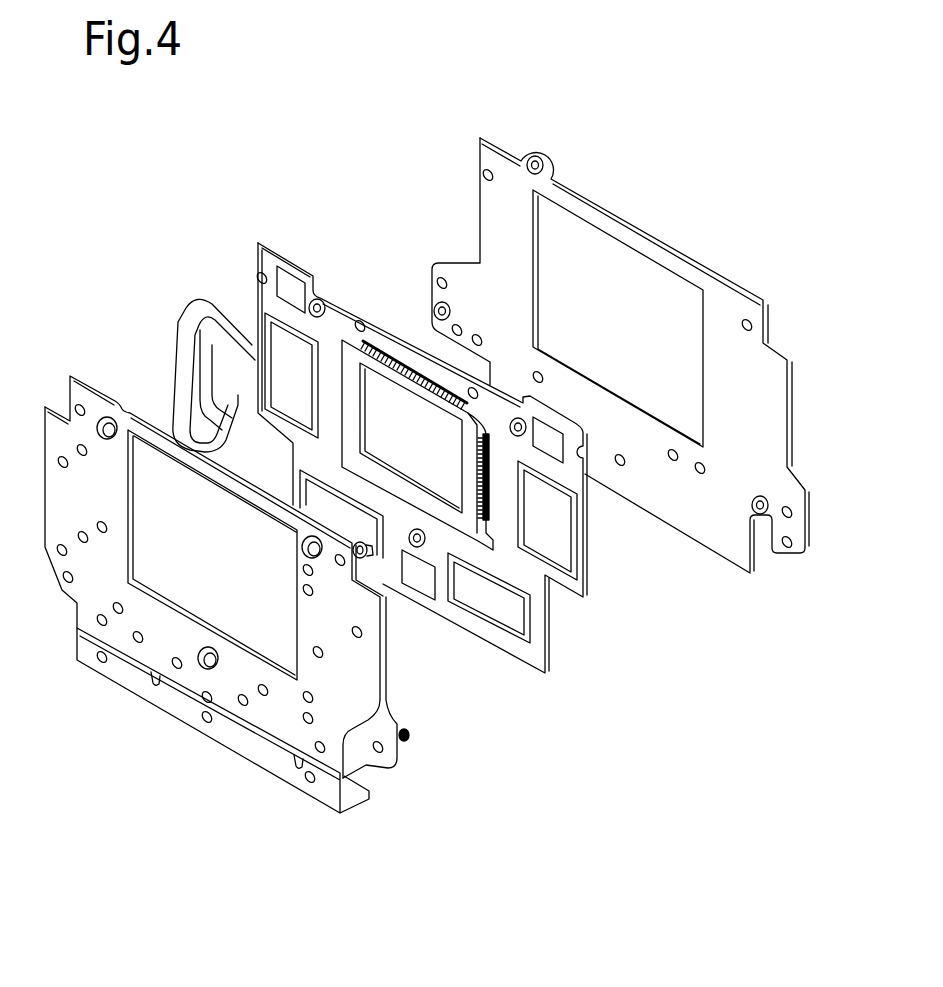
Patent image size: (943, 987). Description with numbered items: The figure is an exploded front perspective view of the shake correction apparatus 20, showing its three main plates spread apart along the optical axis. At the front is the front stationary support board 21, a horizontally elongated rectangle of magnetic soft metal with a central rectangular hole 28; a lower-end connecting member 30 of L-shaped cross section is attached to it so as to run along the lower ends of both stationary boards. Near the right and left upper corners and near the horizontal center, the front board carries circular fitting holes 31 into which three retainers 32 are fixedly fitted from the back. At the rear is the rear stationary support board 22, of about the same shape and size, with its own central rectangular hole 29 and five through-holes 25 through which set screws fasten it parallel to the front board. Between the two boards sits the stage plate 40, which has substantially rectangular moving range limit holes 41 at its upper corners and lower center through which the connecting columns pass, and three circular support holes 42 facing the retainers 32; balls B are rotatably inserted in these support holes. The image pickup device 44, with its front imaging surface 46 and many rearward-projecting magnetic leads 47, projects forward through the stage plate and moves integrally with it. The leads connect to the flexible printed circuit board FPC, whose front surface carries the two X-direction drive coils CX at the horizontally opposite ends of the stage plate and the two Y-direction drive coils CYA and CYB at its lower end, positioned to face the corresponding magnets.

The shake correction apparatus 20 is at (172, 197).
The front stationary support board 21 is at (55, 490).
The rear stationary support board 22 is at (775, 400).
The through-holes 25 is at (487, 180).
The rectangular hole 28 is at (128, 485).
The rectangular hole 29 is at (641, 255).
The lower-end connecting member 30 is at (247, 745).
The fitting holes 31 is at (109, 417).
The retainers 32 is at (107, 442).
The stage plate 40 is at (577, 540).
The moving range limit holes 41 is at (285, 283).
The support holes 42 is at (326, 305).
The image pickup device 44 is at (352, 457).
The imaging surface 46 is at (383, 387).
The leads 47 is at (438, 405).
The flexible printed circuit board FPC is at (188, 352).
The balls B is at (319, 300).
The X-direction drive coils CX is at (279, 411).
The Y-direction drive coil CYA is at (490, 622).
The Y-direction drive coil CYB is at (297, 487).